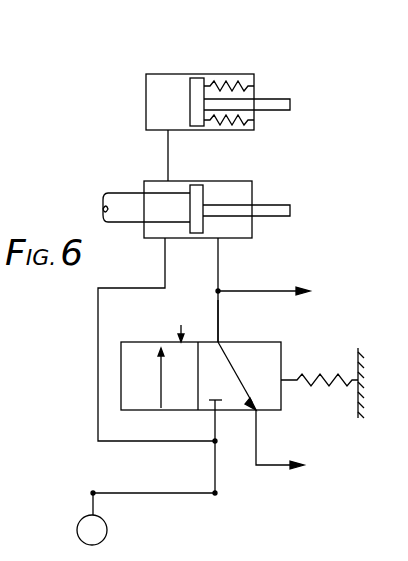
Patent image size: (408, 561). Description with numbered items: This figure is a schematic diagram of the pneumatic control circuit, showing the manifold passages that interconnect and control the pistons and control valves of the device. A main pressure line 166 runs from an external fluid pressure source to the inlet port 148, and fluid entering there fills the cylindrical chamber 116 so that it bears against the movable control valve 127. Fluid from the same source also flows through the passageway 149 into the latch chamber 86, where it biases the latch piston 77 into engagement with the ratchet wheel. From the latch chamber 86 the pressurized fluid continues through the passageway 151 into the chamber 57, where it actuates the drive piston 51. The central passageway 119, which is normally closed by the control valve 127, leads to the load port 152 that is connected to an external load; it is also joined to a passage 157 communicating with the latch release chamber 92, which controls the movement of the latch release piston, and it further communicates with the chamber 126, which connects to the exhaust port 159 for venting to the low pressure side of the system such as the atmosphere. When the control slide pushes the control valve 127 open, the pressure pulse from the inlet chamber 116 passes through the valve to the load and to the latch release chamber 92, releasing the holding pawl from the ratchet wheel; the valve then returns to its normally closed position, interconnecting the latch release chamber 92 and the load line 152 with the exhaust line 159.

The drive piston 51 is at (198, 82).
The chamber 57 is at (188, 59).
The passageway 151 is at (168, 139).
The latch chamber 86 is at (158, 183).
The latch piston 77 is at (200, 188).
The latch release chamber 92 is at (250, 193).
The passageway 149 is at (131, 288).
The passage 157 is at (220, 268).
The load port 152 is at (250, 291).
The control valve 127 is at (179, 325).
The central passageway 119 is at (219, 323).
The chamber 126 is at (279, 361).
The cylindrical chamber 116 is at (215, 462).
The inlet port 148 is at (120, 493).
The main pressure line 166 is at (93, 500).
The exhaust port 159 is at (266, 466).